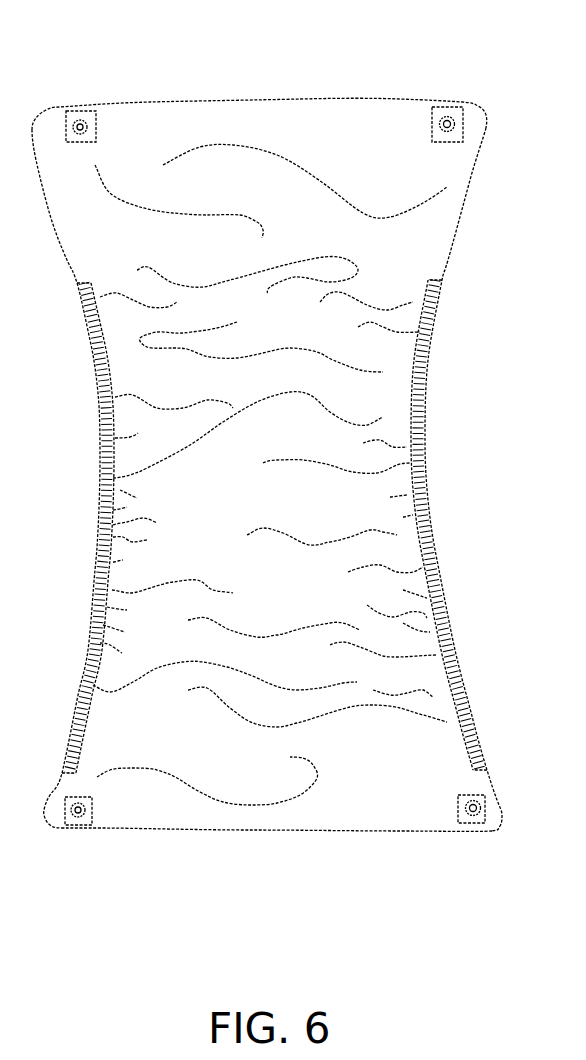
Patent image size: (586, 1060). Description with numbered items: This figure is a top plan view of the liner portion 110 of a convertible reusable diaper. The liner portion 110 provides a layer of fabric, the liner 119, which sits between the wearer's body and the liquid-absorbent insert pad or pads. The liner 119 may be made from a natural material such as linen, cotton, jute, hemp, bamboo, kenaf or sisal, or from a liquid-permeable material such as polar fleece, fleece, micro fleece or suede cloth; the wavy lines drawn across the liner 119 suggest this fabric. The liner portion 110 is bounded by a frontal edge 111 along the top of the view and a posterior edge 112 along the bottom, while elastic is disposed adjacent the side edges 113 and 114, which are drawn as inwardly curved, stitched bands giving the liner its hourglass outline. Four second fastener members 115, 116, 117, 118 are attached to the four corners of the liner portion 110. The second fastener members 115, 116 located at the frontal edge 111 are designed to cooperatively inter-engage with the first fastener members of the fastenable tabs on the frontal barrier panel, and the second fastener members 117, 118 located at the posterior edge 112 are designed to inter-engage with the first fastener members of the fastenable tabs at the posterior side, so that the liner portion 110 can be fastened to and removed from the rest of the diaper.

The liner portion 110 is at (241, 56).
The frontal edge 111 is at (303, 120).
The posterior edge 112 is at (262, 823).
The side edge 113 is at (102, 433).
The side edge 114 is at (417, 452).
The second fastener member 115 is at (81, 112).
The second fastener member 116 is at (448, 110).
The second fastener member 117 is at (78, 826).
The second fastener member 118 is at (473, 824).
The liner 119 is at (363, 388).